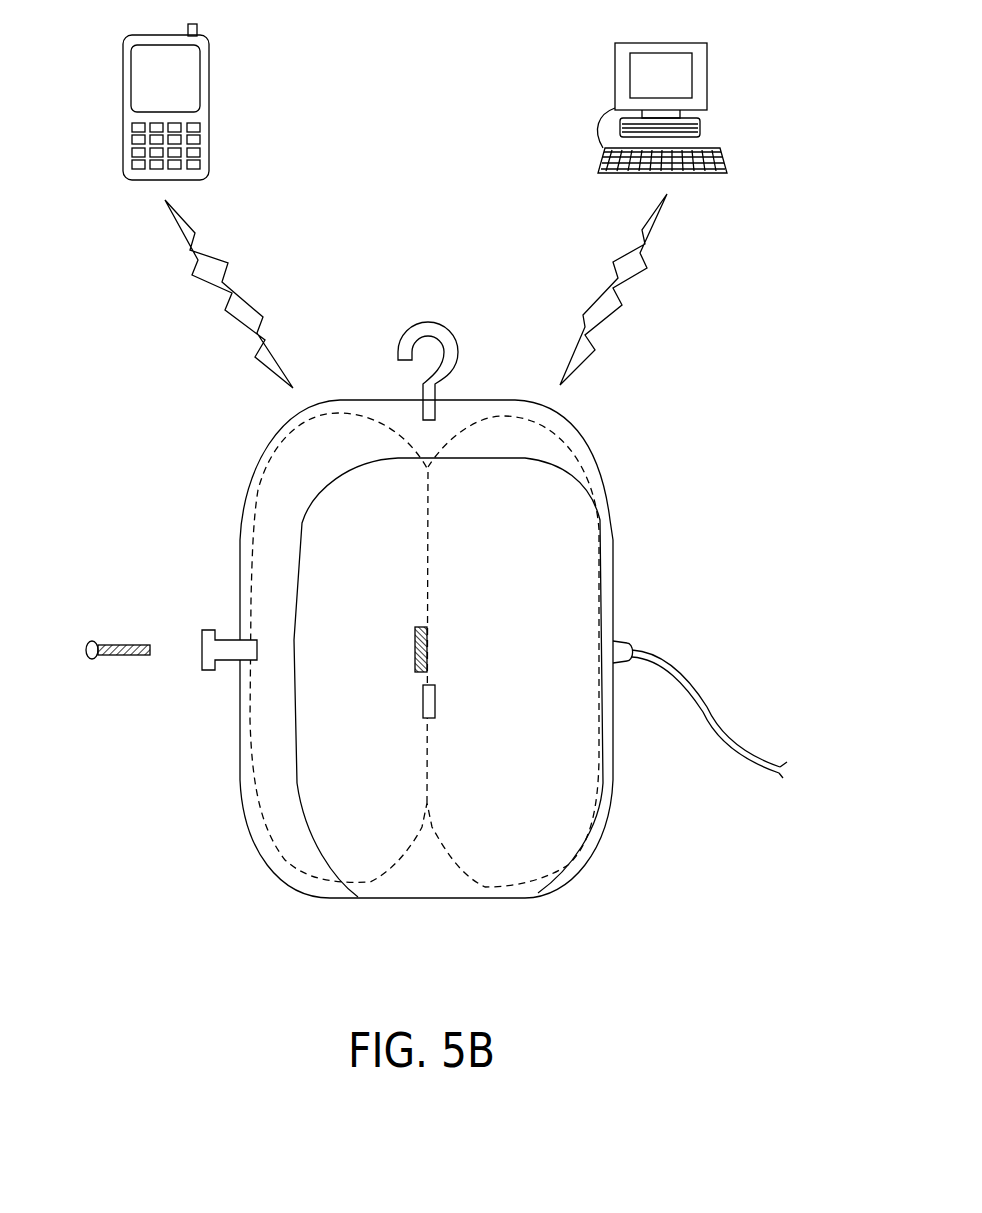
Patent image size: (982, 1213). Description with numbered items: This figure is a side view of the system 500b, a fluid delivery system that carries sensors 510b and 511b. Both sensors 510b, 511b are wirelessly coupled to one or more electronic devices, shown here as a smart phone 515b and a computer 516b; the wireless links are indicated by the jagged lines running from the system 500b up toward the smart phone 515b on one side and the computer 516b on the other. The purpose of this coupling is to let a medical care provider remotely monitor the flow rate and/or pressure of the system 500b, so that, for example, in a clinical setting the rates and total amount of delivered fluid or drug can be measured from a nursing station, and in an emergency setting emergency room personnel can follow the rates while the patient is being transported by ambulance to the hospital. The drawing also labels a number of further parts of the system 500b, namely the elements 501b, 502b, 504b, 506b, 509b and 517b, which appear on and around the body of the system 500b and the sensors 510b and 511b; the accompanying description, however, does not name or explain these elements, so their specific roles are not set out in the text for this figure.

The system 500b is at (183, 372).
The right bladder lobe 501b is at (508, 822).
The outer bag 502b is at (577, 428).
The cable 504b is at (693, 680).
The left bladder lobe 506b is at (342, 822).
The plug/screw 509b is at (112, 657).
The sensor 510b is at (428, 645).
The sensor 511b is at (436, 698).
The smart phone 515b is at (210, 110).
The computer 516b is at (615, 82).
The port fitting 517b is at (633, 645).